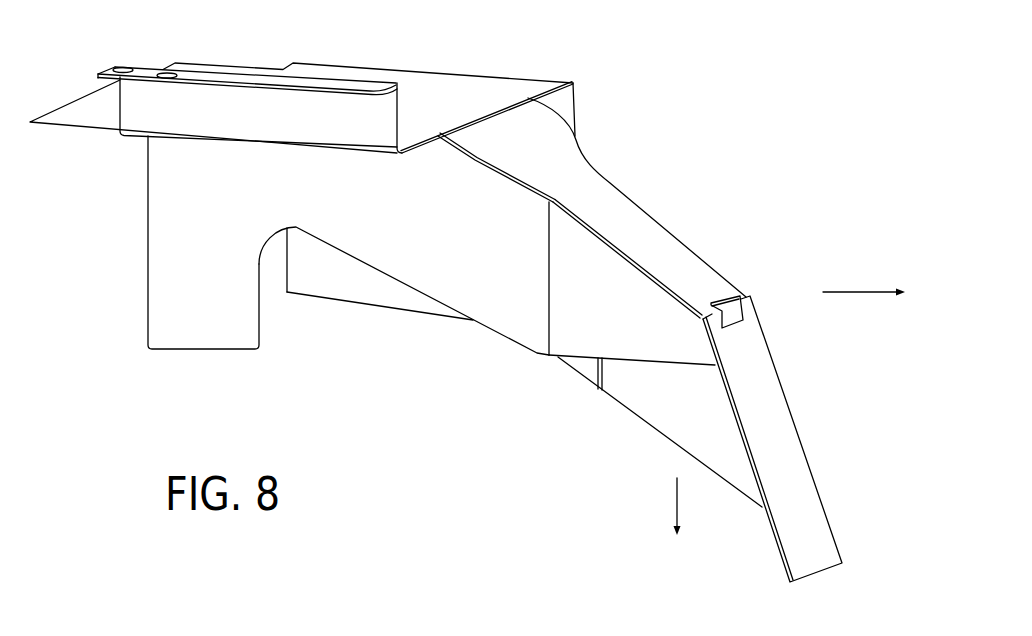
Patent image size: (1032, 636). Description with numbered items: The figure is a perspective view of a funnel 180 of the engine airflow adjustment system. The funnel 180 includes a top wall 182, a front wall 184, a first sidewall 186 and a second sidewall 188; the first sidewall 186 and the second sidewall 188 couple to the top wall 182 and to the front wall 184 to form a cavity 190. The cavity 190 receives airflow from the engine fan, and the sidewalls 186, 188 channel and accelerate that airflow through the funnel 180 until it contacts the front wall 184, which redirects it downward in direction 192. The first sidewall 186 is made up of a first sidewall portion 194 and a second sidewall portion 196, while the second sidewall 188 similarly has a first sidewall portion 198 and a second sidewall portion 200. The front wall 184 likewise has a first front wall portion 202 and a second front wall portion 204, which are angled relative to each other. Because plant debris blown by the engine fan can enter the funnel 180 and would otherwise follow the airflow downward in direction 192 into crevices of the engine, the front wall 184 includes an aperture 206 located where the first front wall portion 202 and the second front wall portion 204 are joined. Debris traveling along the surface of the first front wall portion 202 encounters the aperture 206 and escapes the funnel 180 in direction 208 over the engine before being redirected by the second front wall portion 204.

The funnel 180 is at (699, 94).
The top wall 182 is at (462, 87).
The front wall 184 is at (723, 175).
The first sidewall 186 is at (482, 431).
The second sidewall 188 is at (635, 128).
The cavity 190 is at (304, 357).
The direction 192 is at (677, 497).
The first sidewall portion 194 is at (437, 272).
The first sidewall portion 198 is at (377, 293).
The second sidewall portion 196 is at (633, 347).
The second sidewall portion 200 is at (684, 427).
The first front wall portion 202 is at (637, 226).
The second front wall portion 204 is at (782, 437).
The aperture 206 is at (740, 303).
The direction 208 is at (862, 292).